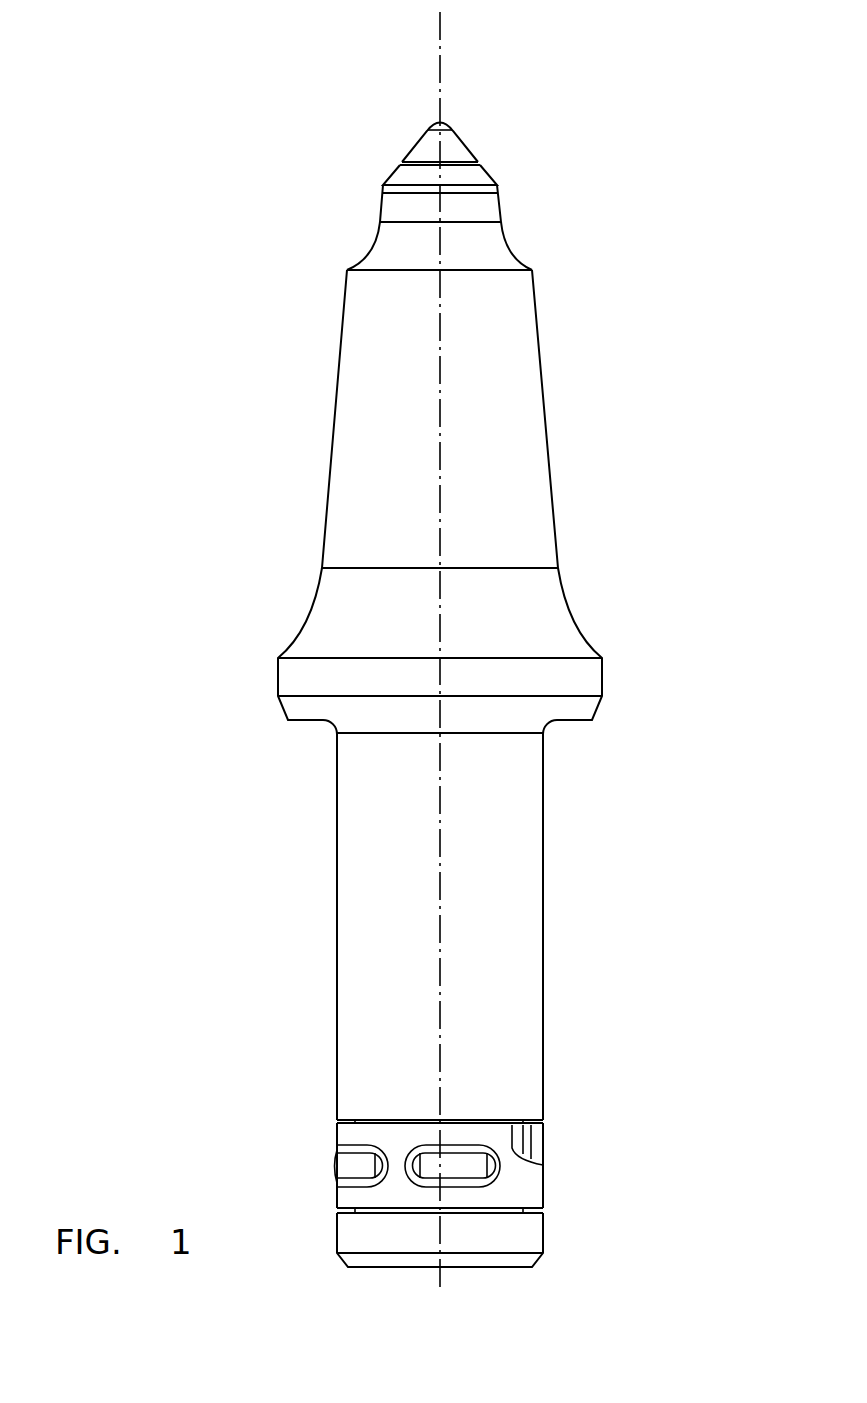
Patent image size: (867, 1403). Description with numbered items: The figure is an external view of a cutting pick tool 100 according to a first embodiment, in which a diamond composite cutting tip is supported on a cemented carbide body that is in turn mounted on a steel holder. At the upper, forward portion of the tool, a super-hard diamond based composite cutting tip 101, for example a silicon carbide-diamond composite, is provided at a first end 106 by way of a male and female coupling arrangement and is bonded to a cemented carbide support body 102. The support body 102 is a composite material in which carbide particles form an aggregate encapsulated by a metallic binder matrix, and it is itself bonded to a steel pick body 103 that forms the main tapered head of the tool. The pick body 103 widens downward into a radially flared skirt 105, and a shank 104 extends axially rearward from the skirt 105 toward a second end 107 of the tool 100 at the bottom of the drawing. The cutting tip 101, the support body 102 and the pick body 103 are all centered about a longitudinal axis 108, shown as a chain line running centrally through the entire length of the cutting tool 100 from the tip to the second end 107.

The cutting pick tool 100 is at (439, 685).
The cutting tip 101 is at (455, 152).
The cemented carbide support body 102 is at (488, 212).
The steel pick body 103 is at (492, 410).
The shank 104 is at (502, 932).
The radially flared skirt 105 is at (580, 680).
The first end 106 is at (534, 173).
The second end 107 is at (575, 1244).
The longitudinal axis 108 is at (442, 70).